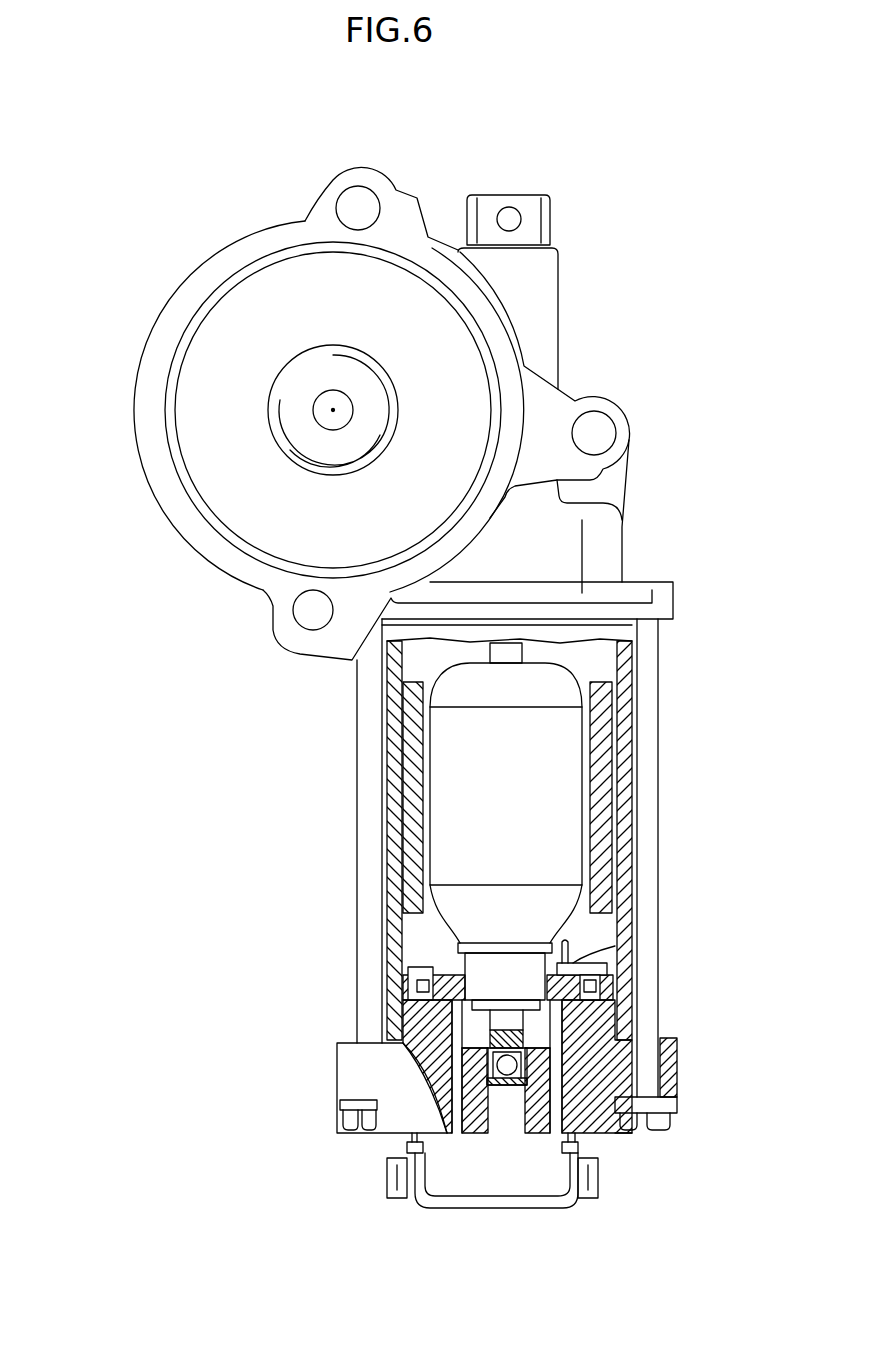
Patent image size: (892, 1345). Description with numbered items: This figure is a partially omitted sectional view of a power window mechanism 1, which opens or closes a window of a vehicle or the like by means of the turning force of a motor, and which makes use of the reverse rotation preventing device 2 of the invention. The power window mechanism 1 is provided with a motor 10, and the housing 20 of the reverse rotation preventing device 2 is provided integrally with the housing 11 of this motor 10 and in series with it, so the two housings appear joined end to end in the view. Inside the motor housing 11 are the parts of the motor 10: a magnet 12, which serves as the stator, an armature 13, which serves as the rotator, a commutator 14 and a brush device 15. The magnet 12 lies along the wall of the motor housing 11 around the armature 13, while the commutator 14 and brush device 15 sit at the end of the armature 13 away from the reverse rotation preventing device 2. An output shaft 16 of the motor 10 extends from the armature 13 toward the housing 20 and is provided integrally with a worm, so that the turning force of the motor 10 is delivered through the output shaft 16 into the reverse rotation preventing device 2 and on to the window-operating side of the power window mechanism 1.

The power window mechanism 1 is at (692, 272).
The reverse rotation preventing device 2 is at (176, 284).
The housing 20 is at (160, 330).
The motor 10 is at (686, 634).
The motor housing 11 is at (626, 531).
The magnet 12 is at (605, 718).
The armature 13 is at (545, 805).
The commutator 14 is at (487, 965).
The brush device 15 is at (588, 963).
The output shaft 16 is at (512, 653).